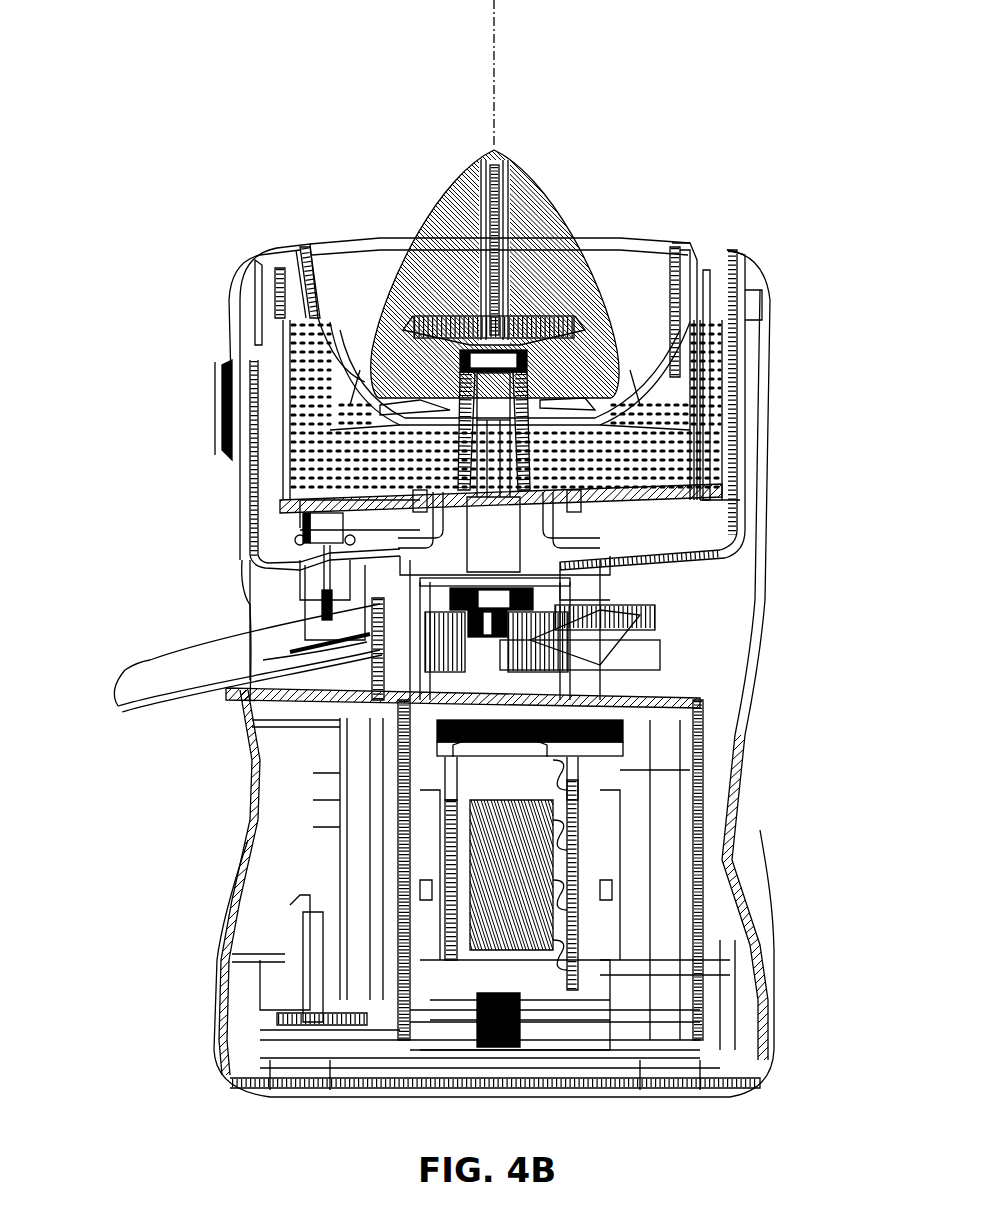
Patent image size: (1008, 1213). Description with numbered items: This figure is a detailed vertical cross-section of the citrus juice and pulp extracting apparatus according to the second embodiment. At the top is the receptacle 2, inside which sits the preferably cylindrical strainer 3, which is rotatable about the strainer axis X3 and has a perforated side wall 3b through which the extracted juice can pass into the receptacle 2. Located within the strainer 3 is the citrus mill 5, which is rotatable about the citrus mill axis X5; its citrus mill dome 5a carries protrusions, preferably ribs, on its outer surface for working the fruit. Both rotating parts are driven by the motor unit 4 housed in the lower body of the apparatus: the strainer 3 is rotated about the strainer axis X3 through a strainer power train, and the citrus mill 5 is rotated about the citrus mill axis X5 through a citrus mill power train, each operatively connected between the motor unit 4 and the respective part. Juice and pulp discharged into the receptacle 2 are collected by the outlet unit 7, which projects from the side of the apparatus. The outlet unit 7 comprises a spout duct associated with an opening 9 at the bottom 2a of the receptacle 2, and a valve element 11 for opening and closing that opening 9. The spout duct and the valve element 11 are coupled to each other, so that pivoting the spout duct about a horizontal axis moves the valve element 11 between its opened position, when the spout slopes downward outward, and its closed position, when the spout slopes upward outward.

The receptacle 2 is at (720, 440).
The bottom of the receptacle 2a is at (722, 562).
The strainer 3 is at (690, 386).
The perforated side wall 3b is at (706, 412).
The motor unit 4 is at (487, 856).
The citrus mill 5 is at (602, 223).
The citrus mill dome 5a is at (556, 186).
The outlet unit 7 is at (146, 658).
The opening 9 is at (298, 560).
The valve element 11 is at (273, 527).
The strainer axis X3 is at (495, 78).
The citrus mill axis X5 is at (495, 108).